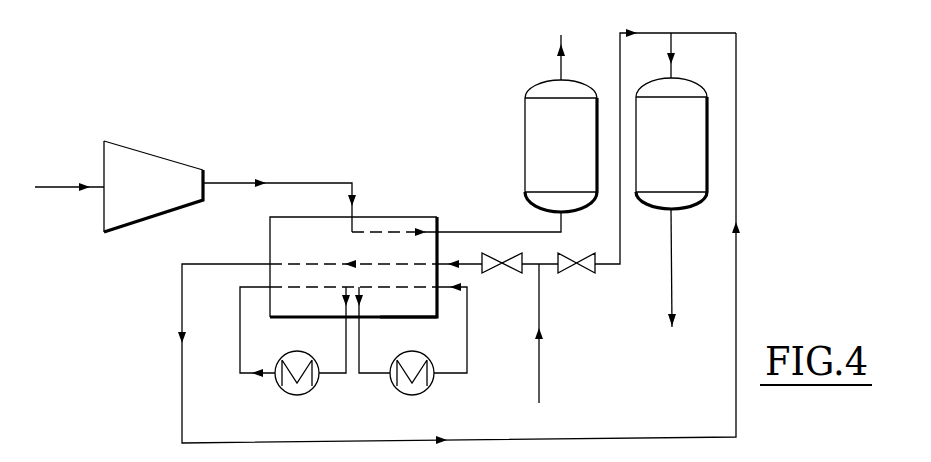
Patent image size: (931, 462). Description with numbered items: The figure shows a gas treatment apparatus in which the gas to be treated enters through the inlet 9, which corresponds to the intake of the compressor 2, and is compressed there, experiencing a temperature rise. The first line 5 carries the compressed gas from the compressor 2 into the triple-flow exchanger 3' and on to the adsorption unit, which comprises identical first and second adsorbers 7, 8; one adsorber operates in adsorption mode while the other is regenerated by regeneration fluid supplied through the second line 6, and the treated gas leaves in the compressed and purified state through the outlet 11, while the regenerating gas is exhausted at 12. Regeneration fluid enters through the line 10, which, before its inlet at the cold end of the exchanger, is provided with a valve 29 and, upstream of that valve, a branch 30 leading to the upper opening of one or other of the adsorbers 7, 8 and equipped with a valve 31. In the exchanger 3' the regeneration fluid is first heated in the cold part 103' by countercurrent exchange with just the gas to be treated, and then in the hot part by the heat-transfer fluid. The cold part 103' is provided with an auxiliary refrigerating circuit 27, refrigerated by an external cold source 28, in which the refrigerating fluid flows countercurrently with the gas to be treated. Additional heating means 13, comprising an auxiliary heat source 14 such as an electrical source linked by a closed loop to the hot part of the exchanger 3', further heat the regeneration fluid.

The compressor 2 is at (140, 150).
The inlet for the gas to be treated 9 is at (72, 188).
The first line 5 is at (310, 182).
The triple-flow exchanger 3' is at (353, 238).
The cold part of the exchanger 103' is at (453, 334).
The first adsorber 7 is at (526, 172).
The outlet for the treated gas 11 is at (560, 70).
The valve 29 is at (492, 273).
The branch 30 is at (546, 265).
The valve 31 is at (586, 273).
The regeneration fluid inlet 10 is at (544, 387).
The second adsorber 8 is at (676, 211).
The regenerating gas exhaust 12 is at (674, 283).
The second line 6 is at (182, 385).
The additional heating means 13 is at (233, 320).
The auxiliary heat source 14 is at (297, 395).
The auxiliary refrigerating circuit 27 is at (473, 367).
The external cold source 28 is at (412, 395).